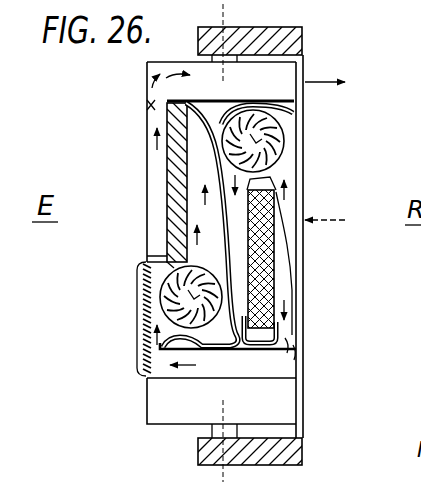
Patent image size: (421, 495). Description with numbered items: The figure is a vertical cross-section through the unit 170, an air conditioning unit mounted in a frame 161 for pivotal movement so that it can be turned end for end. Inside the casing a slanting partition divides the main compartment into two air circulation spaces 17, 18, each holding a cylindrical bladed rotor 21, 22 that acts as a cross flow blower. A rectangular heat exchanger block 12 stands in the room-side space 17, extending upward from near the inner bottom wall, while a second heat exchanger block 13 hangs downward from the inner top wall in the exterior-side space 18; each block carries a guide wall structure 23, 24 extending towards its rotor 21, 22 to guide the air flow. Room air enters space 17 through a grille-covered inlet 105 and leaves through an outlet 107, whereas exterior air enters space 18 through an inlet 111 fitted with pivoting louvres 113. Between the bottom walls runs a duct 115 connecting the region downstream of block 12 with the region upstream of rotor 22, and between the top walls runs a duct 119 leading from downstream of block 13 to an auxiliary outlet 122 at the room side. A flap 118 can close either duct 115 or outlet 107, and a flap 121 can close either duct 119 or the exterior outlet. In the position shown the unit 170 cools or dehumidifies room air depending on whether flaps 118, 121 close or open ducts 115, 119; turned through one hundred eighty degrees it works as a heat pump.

The frame 161 is at (300, 35).
The auxiliary outlet 122 is at (291, 73).
The duct 119 is at (264, 92).
The flap 121 is at (150, 104).
The heat exchanger block 13 is at (170, 150).
The cylindrical bladed rotor 21 is at (285, 128).
The guide wall structure 23 is at (270, 181).
The inlet 105 is at (302, 198).
The air circulation space 17 is at (245, 216).
The air circulation space 18 is at (222, 225).
The heat exchanger block 12 is at (274, 249).
The outlet 107 is at (298, 284).
The guide wall structure 24 is at (160, 258).
The cylindrical bladed rotor 22 is at (162, 280).
The inlet 111 is at (137, 318).
The pivoting louvres 113 is at (148, 330).
The flap 118 is at (286, 336).
The duct 115 is at (244, 377).
The unit 170 is at (300, 428).